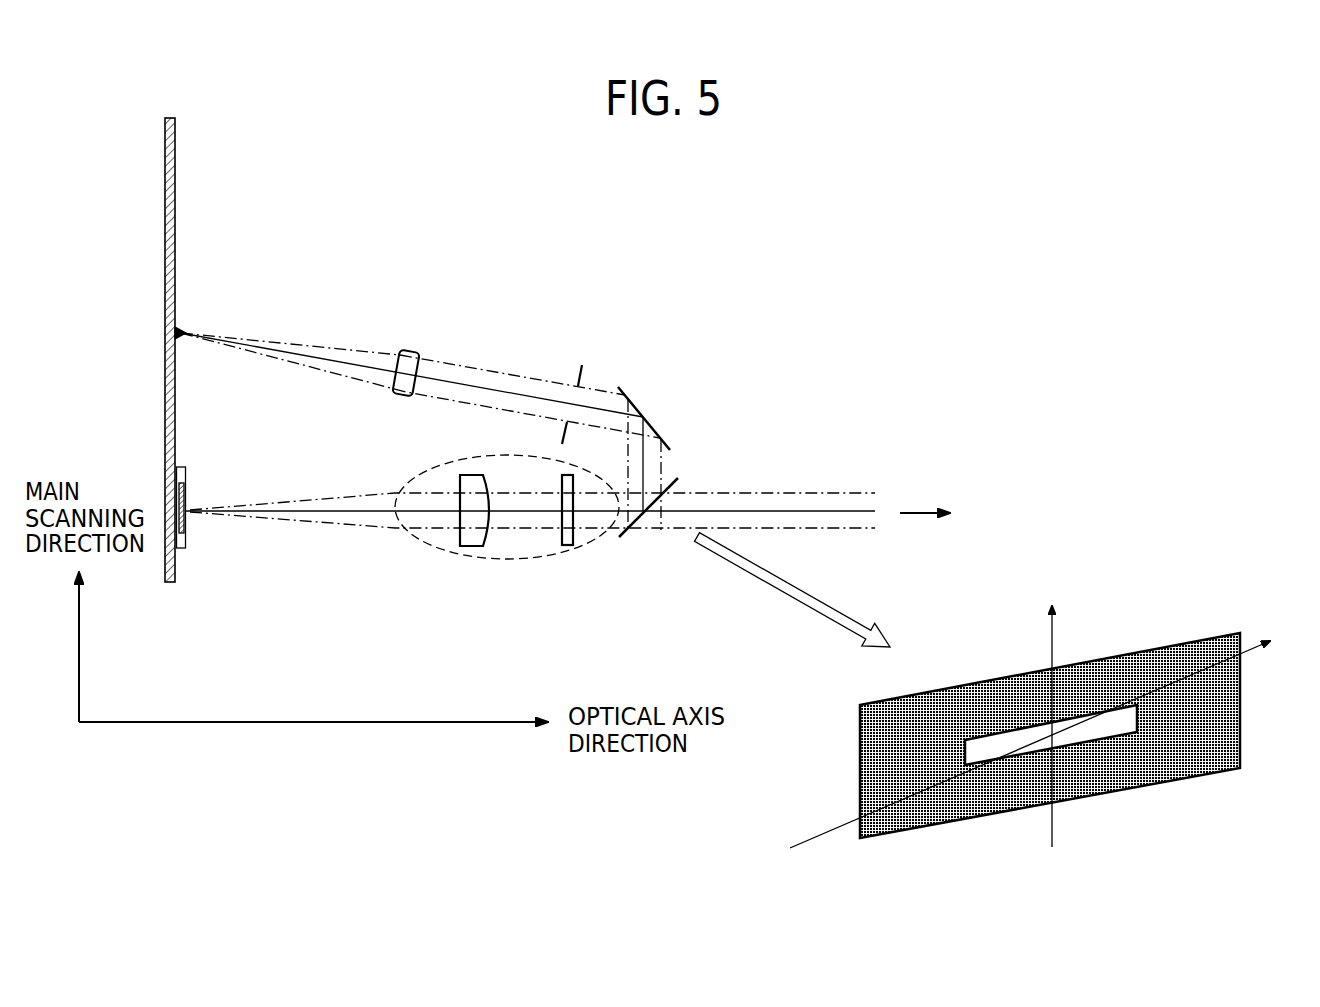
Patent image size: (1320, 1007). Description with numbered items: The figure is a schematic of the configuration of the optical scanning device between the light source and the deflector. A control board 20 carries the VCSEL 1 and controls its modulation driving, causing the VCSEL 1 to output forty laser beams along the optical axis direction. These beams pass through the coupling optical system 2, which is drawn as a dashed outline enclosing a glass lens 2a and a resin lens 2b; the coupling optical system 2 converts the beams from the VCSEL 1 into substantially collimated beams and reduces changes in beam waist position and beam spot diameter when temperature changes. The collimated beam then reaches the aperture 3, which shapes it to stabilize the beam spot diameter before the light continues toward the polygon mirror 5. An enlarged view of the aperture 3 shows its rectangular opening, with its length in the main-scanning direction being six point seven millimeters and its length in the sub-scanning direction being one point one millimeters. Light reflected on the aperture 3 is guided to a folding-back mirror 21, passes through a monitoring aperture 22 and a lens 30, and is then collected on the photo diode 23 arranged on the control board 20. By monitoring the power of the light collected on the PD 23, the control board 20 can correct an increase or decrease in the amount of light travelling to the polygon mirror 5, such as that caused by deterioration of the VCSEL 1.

The control board 20 is at (176, 192).
The photo diode (PD) 23 is at (214, 305).
The VCSEL 1 is at (187, 478).
The lens 30 is at (431, 322).
The monitoring aperture 22 is at (583, 360).
The folding-back mirror 21 is at (654, 412).
The coupling optical system 2 is at (408, 546).
The lens 2a is at (472, 545).
The lens 2b is at (568, 546).
The aperture 3 is at (657, 525).
The polygon mirror 5 is at (976, 481).